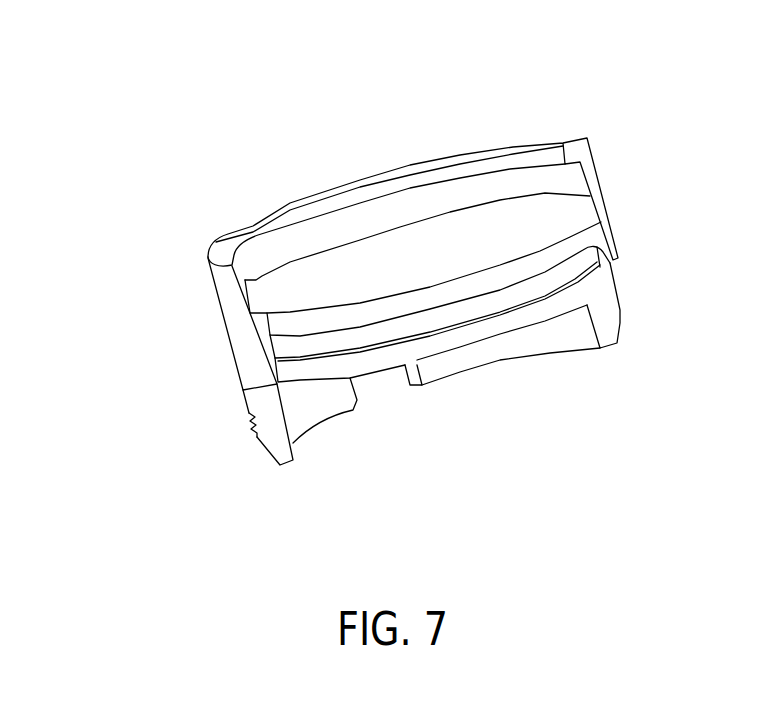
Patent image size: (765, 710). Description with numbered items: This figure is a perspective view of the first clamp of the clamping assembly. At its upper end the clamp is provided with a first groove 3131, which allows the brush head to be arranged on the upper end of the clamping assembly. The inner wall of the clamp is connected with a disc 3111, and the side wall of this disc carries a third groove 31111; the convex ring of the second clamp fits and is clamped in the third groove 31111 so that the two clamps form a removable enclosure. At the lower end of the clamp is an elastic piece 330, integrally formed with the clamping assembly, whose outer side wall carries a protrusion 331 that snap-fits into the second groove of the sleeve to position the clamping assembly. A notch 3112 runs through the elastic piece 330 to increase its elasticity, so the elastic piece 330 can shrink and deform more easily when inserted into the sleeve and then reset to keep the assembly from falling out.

The first groove 3131 is at (491, 179).
The disc 3111 is at (353, 273).
The third groove 31111 is at (465, 310).
The notch 3112 is at (385, 398).
The elastic piece 330 is at (253, 403).
The protrusion 331 is at (252, 437).